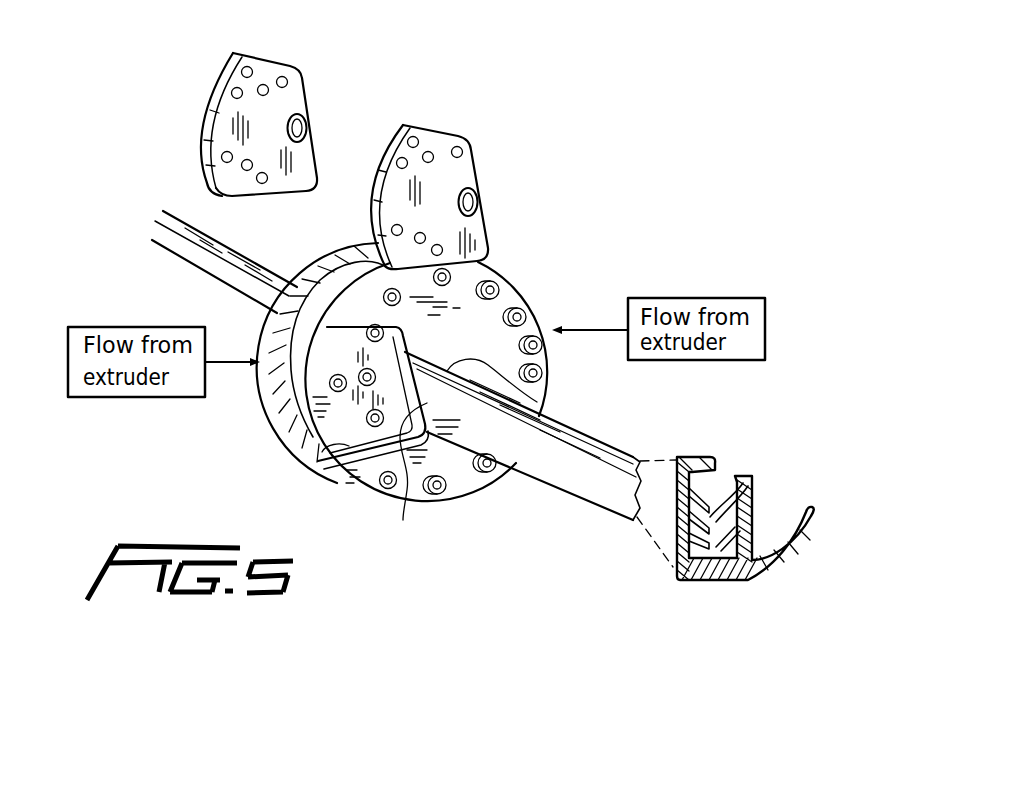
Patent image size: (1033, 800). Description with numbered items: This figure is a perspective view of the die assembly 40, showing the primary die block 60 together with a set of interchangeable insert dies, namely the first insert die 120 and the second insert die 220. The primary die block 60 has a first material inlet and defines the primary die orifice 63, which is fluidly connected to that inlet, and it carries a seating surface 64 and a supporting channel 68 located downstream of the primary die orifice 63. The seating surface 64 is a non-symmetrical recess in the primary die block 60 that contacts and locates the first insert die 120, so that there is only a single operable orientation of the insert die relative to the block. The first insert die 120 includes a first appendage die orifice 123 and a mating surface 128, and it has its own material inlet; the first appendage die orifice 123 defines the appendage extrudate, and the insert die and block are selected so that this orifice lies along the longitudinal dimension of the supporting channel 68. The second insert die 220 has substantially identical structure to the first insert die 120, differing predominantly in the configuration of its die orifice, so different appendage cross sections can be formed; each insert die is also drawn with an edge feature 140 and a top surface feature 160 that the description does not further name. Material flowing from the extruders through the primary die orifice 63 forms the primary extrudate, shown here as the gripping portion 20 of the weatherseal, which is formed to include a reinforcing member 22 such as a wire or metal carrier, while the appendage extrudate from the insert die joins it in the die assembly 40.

The gripping portion 20 is at (768, 480).
The reinforcing member 22 is at (157, 242).
The die assembly 40 is at (421, 382).
The primary die block 60 is at (460, 473).
The primary die orifice 63 is at (408, 510).
The seating surface 64 is at (305, 452).
The supporting channel 68 is at (534, 403).
The first insert die 120 is at (477, 143).
The first appendage die orifice 123 is at (308, 128).
The mating surface 128 is at (293, 190).
The plate edge 140 is at (208, 96).
The plate top surface 160 is at (272, 66).
The second insert die 220 is at (354, 140).